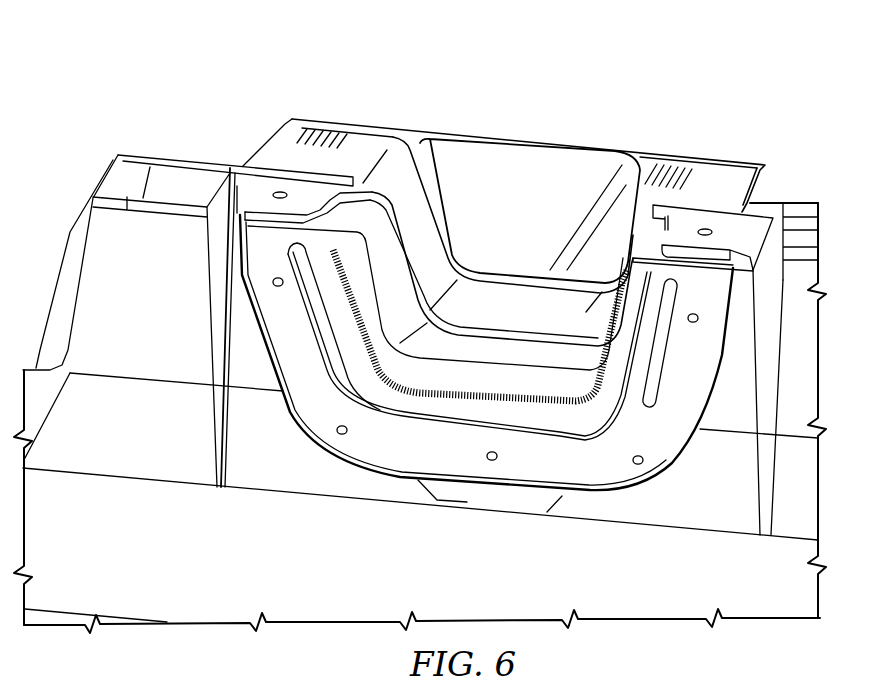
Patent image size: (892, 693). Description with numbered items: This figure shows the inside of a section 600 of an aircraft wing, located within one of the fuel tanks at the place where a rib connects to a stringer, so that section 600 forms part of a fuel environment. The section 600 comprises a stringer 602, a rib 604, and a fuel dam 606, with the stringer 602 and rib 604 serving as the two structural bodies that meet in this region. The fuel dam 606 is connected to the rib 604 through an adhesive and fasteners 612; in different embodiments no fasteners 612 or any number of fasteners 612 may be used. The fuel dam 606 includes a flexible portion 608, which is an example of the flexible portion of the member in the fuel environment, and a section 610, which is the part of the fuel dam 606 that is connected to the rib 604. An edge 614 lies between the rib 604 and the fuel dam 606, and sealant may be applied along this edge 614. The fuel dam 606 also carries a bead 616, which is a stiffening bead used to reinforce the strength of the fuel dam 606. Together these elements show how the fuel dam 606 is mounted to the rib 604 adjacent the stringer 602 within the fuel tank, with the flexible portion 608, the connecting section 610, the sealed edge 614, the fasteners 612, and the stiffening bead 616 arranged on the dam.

The section 600 is at (356, 63).
The stringer 602 is at (668, 150).
The rib 604 is at (805, 356).
The fuel dam 606 is at (467, 368).
The flexible portion 608 is at (553, 402).
The section 610 is at (645, 440).
The fasteners 612 is at (275, 285).
The edge 614 is at (310, 442).
The bead 616 is at (375, 418).